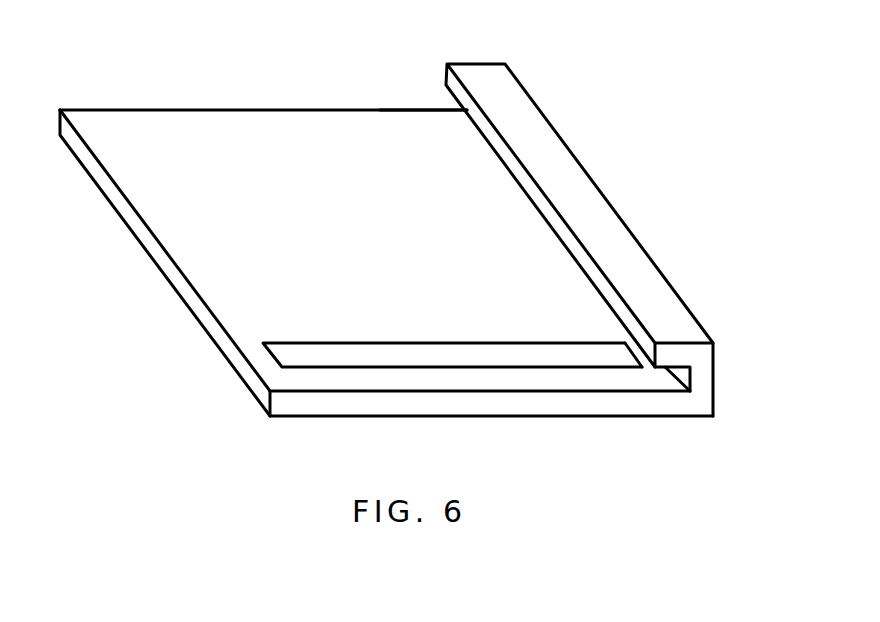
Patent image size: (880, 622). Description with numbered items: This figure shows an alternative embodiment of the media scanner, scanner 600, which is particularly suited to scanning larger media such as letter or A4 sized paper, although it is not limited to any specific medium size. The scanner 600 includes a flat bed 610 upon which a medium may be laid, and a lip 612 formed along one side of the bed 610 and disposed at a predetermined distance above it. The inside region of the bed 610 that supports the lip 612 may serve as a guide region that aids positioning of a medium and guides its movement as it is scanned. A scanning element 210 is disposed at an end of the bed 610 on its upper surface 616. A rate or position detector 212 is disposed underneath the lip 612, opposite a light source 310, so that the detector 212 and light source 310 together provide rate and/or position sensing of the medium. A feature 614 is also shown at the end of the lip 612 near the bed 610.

The scanner 600 is at (316, 44).
The bed 610 is at (180, 294).
The lip 612 is at (572, 203).
The end opening 614 is at (682, 375).
The upper surface 616 is at (270, 157).
The detector 212 is at (463, 113).
The scanning element 210 is at (455, 370).
The light source 310 is at (647, 380).